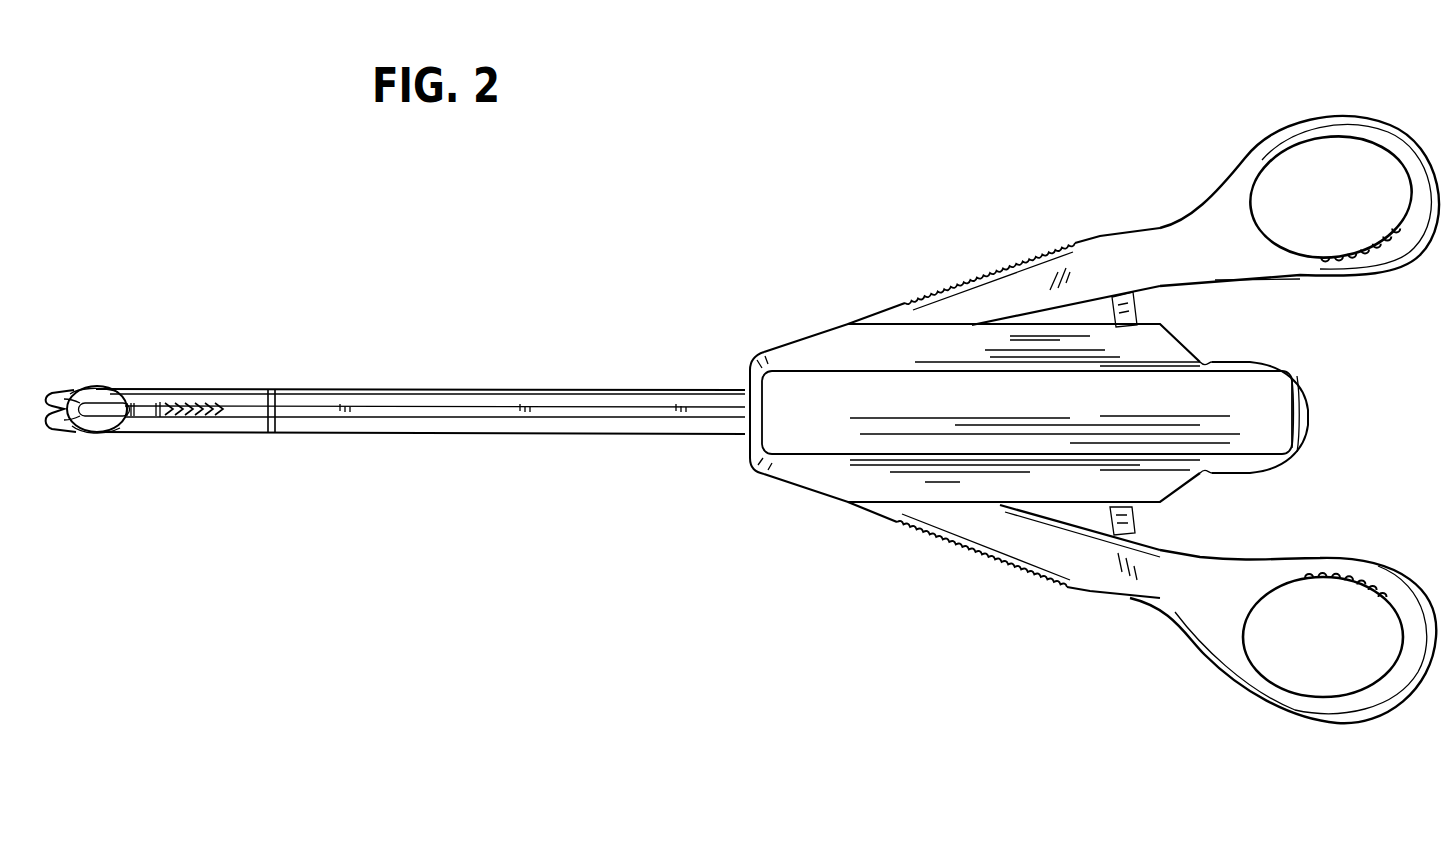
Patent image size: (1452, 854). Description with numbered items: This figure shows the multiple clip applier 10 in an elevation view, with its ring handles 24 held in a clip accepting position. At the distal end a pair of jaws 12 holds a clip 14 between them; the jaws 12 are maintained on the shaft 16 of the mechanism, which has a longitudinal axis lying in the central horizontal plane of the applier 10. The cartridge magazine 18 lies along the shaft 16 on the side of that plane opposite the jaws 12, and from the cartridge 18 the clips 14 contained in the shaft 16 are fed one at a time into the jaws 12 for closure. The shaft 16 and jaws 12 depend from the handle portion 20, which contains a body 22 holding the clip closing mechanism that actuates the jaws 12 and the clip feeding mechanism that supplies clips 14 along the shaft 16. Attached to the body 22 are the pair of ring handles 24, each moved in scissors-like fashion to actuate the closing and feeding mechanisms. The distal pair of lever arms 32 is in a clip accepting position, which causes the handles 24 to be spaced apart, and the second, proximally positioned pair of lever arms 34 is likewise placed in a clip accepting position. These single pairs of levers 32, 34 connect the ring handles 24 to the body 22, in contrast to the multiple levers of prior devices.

The multiple clip applier 10 is at (593, 377).
The jaws 12 is at (70, 386).
The clip 14 is at (49, 392).
The shaft 16 is at (398, 388).
The cartridge magazine 18 is at (188, 418).
The handle portion 20 is at (747, 460).
The body 22 is at (1310, 415).
The ring handles 24 is at (1165, 225).
The lever arm 32 is at (1005, 320).
The lever arm 34 is at (1112, 300).